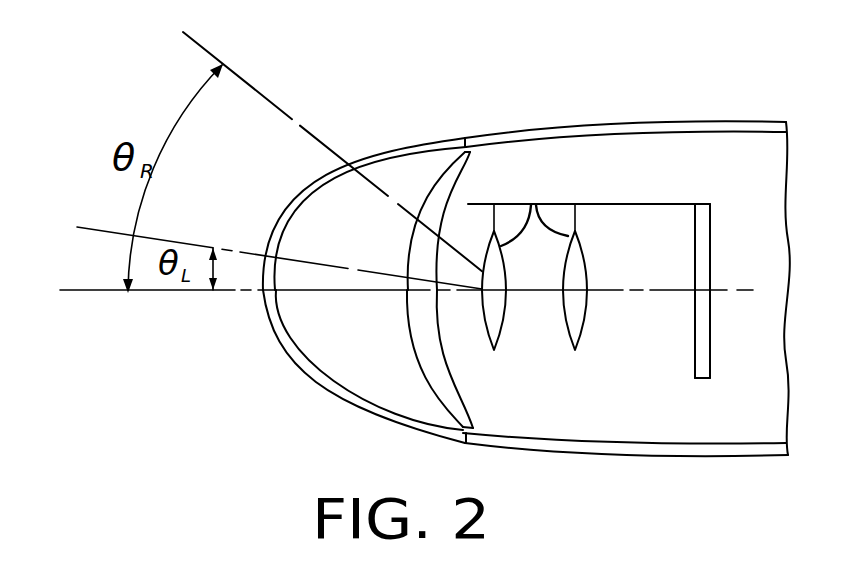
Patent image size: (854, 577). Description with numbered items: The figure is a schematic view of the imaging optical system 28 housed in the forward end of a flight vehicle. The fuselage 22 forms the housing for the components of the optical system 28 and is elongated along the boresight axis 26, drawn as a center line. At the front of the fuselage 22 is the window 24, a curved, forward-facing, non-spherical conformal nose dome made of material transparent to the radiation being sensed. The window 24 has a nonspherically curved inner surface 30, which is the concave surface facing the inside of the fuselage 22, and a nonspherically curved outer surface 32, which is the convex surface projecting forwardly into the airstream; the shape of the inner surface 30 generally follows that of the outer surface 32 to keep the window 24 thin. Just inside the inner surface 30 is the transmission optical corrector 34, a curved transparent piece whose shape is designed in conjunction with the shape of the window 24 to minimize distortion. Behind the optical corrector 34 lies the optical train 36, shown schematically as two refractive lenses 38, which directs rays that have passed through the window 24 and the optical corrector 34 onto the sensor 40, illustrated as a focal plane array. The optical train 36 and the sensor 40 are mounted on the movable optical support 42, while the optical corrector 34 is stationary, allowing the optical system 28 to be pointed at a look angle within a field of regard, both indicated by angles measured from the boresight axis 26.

The fuselage 22 is at (558, 127).
The window 24 is at (295, 362).
The boresight axis 26 is at (90, 292).
The imaging optical system 28 is at (622, 180).
The inner surface 30 is at (332, 372).
The outer surface 32 is at (350, 405).
The transmission optical corrector 34 is at (413, 319).
The optical train 36 is at (593, 359).
The refractive lenses 38 is at (533, 205).
The sensor 40 is at (705, 380).
The movable optical support 42 is at (674, 203).